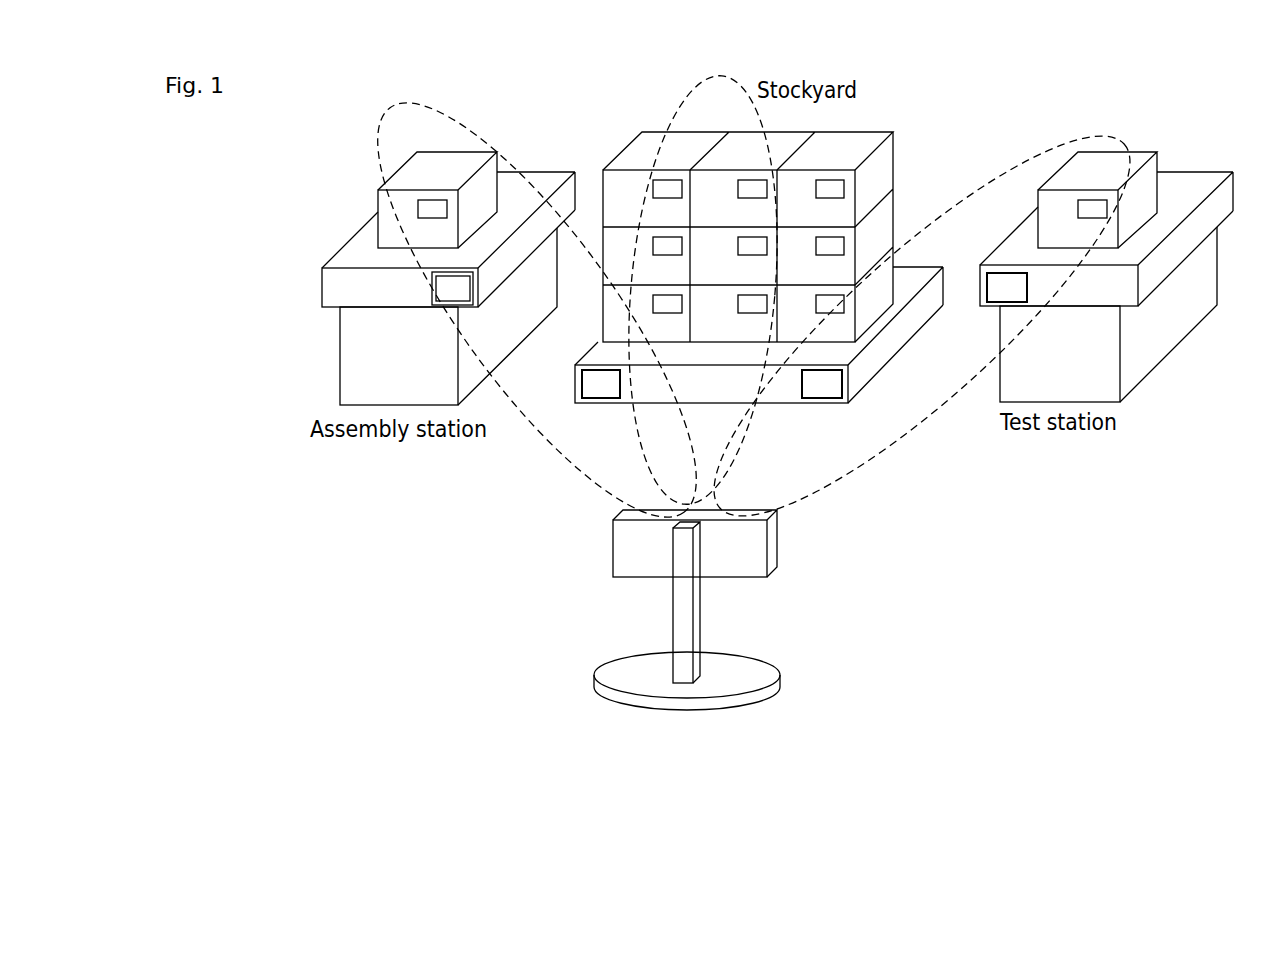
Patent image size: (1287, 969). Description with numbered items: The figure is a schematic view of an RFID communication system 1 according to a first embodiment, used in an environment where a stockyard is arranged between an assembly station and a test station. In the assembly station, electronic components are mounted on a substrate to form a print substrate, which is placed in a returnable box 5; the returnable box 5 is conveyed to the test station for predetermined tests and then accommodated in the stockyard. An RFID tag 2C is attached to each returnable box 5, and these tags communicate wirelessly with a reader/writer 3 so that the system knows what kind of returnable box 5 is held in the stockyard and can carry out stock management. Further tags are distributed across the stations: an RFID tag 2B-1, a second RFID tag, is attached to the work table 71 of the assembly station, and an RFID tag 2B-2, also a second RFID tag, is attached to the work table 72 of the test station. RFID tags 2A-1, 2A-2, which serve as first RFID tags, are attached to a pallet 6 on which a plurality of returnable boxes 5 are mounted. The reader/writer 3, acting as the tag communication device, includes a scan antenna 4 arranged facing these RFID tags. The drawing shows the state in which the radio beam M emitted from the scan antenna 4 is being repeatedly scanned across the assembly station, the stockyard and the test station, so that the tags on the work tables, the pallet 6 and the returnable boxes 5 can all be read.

The RFID communication system 1 is at (386, 524).
The RFID tag (first RFID tag) 2A-1 is at (582, 383).
The RFID tag (first RFID tag) 2A-2 is at (812, 403).
The RFID tag (second RFID tag) 2B-1 is at (432, 297).
The RFID tag (second RFID tag) 2B-2 is at (1027, 290).
The RFID tag 2C is at (653, 191).
The reader/writer 3 is at (740, 610).
The scan antenna 4 is at (777, 545).
The returnable box 5 is at (478, 198).
The pallet 6 is at (877, 366).
The work table 71 is at (340, 333).
The work table 72 is at (1133, 373).
The radio beam M is at (380, 130).